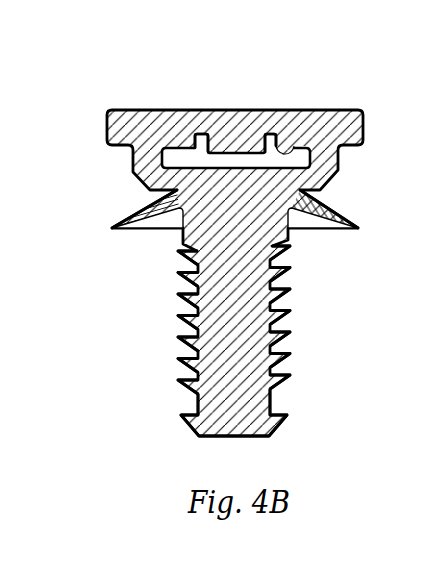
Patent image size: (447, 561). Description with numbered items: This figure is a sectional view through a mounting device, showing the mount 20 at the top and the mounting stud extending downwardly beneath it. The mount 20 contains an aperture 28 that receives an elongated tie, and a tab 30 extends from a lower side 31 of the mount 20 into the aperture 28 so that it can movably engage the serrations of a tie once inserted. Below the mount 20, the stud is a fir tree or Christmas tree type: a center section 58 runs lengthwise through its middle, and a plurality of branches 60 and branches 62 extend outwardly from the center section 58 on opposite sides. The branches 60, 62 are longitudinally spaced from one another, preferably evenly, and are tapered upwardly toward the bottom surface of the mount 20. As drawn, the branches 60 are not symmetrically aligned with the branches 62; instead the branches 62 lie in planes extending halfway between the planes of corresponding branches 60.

The mount 20 is at (88, 100).
The aperture 28 is at (200, 152).
The tab 30 is at (247, 147).
The lower side 31 is at (301, 150).
The center section 58 is at (232, 423).
The branches 60 is at (178, 338).
The branches 62 is at (292, 330).